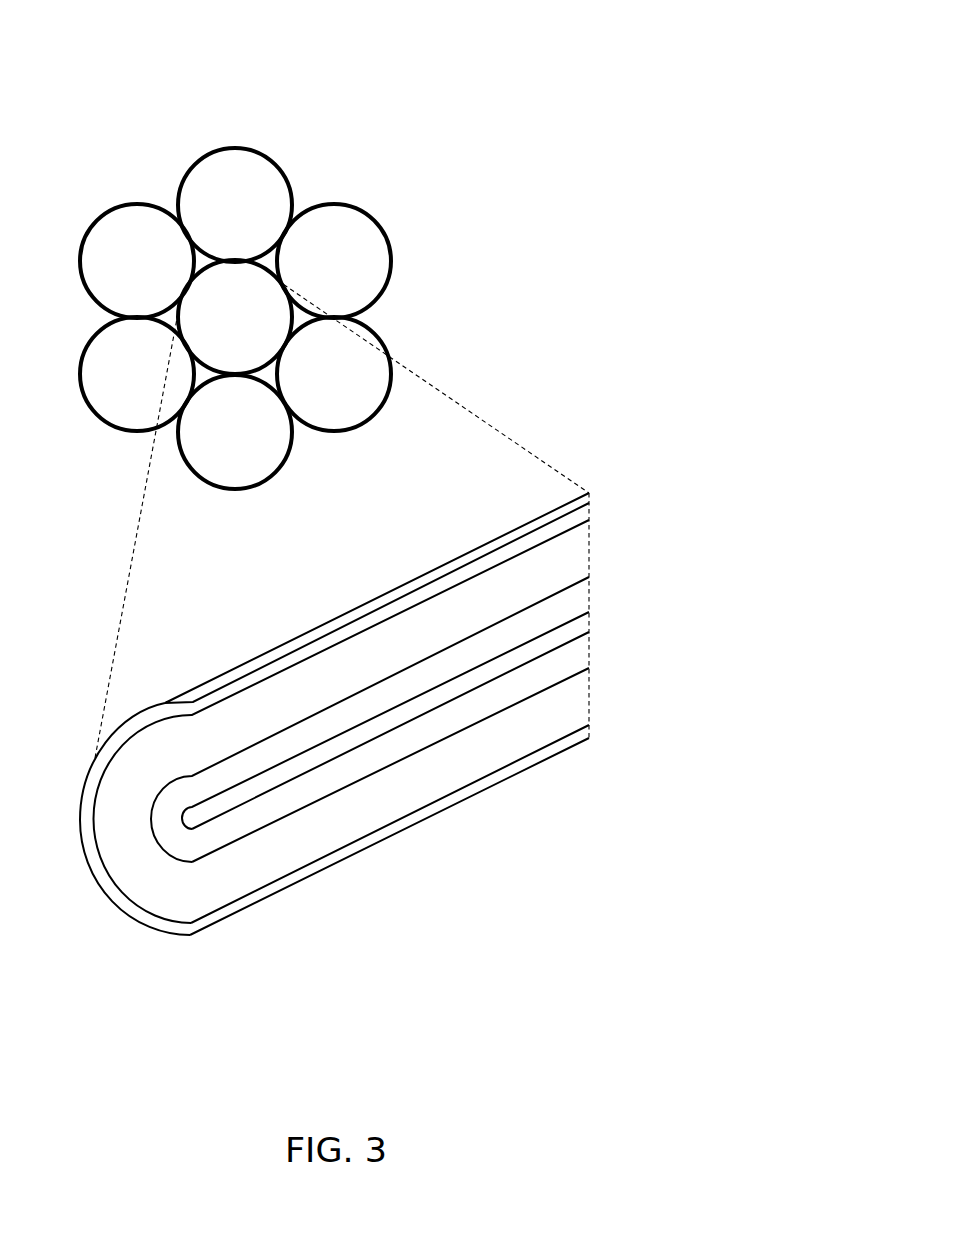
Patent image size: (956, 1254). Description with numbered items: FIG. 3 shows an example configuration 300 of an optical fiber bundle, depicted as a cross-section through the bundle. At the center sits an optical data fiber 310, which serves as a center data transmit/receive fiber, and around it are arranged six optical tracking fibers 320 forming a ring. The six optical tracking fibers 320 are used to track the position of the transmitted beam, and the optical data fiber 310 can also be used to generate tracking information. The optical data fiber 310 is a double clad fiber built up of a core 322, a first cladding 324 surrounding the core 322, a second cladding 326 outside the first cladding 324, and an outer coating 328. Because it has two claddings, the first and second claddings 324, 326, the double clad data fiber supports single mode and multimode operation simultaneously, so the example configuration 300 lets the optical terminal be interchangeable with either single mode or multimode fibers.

The example configuration 300 is at (367, 118).
The optical data fiber 310 is at (256, 332).
The optical tracking fibers 320 is at (256, 220).
The core 322 is at (448, 705).
The first cladding 324 is at (400, 760).
The second cladding 326 is at (344, 837).
The coating 328 is at (292, 892).